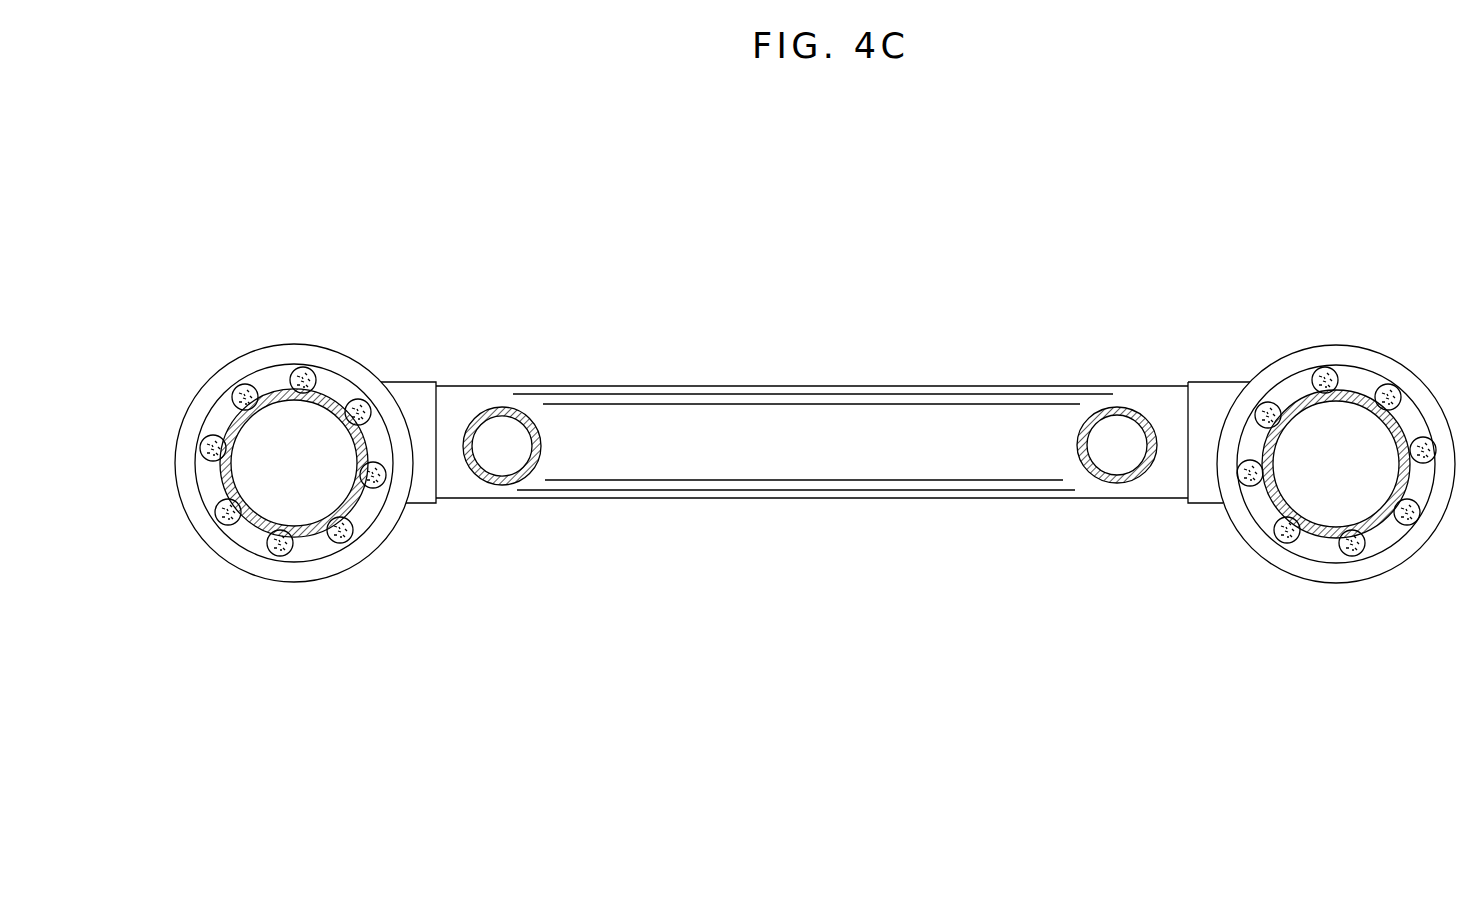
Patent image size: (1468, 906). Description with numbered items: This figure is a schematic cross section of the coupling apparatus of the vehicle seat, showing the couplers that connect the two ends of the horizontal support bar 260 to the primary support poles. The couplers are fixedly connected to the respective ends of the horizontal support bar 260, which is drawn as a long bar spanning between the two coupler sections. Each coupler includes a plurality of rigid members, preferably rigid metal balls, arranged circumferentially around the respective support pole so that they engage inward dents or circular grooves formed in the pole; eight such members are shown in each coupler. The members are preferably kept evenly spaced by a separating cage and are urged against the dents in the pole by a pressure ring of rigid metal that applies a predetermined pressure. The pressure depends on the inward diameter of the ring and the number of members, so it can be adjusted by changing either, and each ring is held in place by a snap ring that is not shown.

The horizontal support bar 260 is at (720, 420).